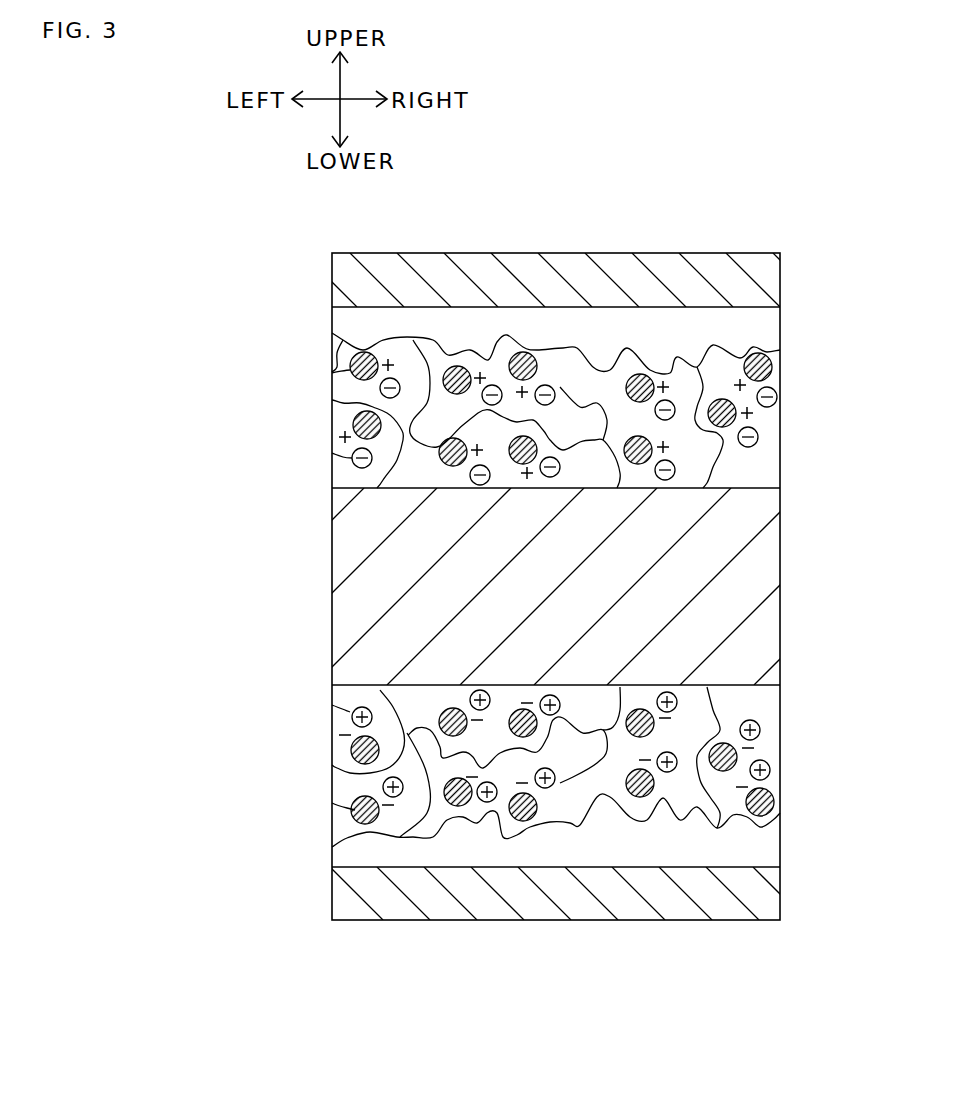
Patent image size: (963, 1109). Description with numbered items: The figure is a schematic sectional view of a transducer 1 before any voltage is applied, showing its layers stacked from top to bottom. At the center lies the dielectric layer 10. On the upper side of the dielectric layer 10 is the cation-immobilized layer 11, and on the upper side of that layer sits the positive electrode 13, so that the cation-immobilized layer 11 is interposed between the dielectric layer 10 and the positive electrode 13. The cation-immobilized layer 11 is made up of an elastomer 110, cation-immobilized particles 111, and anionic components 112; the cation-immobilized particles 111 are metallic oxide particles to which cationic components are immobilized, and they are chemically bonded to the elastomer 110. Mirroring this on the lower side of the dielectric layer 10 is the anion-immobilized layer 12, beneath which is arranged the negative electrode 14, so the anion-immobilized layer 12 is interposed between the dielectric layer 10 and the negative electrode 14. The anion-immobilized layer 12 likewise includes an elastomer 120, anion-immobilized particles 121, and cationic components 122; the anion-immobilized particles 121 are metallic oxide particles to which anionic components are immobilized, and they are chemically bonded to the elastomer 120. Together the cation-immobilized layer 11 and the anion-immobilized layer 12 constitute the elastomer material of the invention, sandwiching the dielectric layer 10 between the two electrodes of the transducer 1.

The transducer 1 is at (727, 171).
The dielectric layer 10 is at (767, 540).
The cation-immobilized layer 11 is at (768, 320).
The anion-immobilized layer 12 is at (767, 710).
The positive electrode 13 is at (738, 262).
The negative electrode 14 is at (760, 905).
The elastomer 110 is at (335, 342).
The cation-immobilized particle 111 is at (350, 370).
The anionic component 112 is at (352, 458).
The elastomer 120 is at (348, 835).
The anion-immobilized particle 121 is at (350, 809).
The cationic component 122 is at (352, 716).